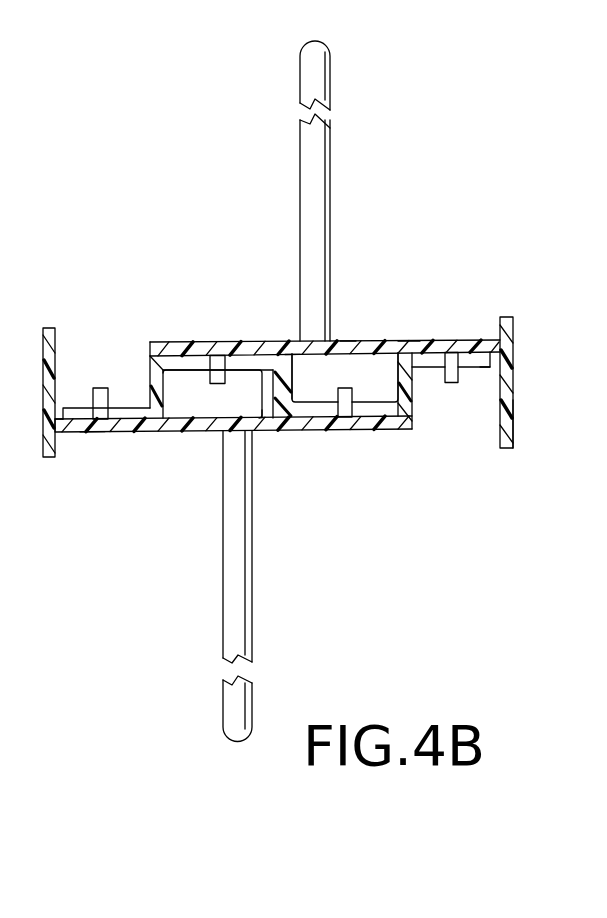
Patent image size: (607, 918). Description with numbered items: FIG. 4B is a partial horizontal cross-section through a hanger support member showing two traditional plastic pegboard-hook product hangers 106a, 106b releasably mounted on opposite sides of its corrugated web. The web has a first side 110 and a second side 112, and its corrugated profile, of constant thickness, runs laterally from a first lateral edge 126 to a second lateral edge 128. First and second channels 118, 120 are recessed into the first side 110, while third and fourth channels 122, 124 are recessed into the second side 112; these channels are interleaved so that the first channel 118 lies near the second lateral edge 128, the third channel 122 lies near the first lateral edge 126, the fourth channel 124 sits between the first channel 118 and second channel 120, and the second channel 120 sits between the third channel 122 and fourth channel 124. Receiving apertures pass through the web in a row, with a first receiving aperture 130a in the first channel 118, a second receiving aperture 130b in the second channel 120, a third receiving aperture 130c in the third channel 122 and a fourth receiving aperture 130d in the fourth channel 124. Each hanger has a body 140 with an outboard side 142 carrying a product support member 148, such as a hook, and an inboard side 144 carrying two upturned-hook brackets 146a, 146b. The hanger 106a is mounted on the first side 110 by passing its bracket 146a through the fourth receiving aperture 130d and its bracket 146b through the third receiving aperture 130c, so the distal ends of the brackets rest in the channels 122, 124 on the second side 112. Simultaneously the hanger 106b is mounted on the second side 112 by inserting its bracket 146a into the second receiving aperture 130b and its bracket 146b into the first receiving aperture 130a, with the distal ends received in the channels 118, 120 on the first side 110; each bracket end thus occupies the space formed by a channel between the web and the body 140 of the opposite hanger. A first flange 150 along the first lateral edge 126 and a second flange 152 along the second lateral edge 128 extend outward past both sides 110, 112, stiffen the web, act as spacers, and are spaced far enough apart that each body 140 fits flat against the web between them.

The product hanger 106a is at (221, 637).
The product hanger 106b is at (331, 160).
The first side 110 is at (138, 432).
The second side 112 is at (273, 342).
The first channel 118 is at (490, 367).
The second channel 120 is at (264, 431).
The third channel 122 is at (63, 408).
The fourth channel 124 is at (295, 341).
The first lateral edge 126 is at (52, 419).
The second lateral edge 128 is at (495, 354).
The first receiving aperture 130a is at (430, 341).
The second receiving aperture 130b is at (198, 363).
The third receiving aperture 130c is at (92, 432).
The fourth receiving aperture 130d is at (332, 408).
The body 140 is at (372, 341).
The outboard side 142 is at (347, 341).
The inboard side 144 is at (409, 341).
The bracket 146a is at (203, 379).
The bracket 146b is at (100, 388).
The product support member 148 is at (331, 74).
The first flange 150 is at (50, 328).
The second flange 152 is at (505, 317).